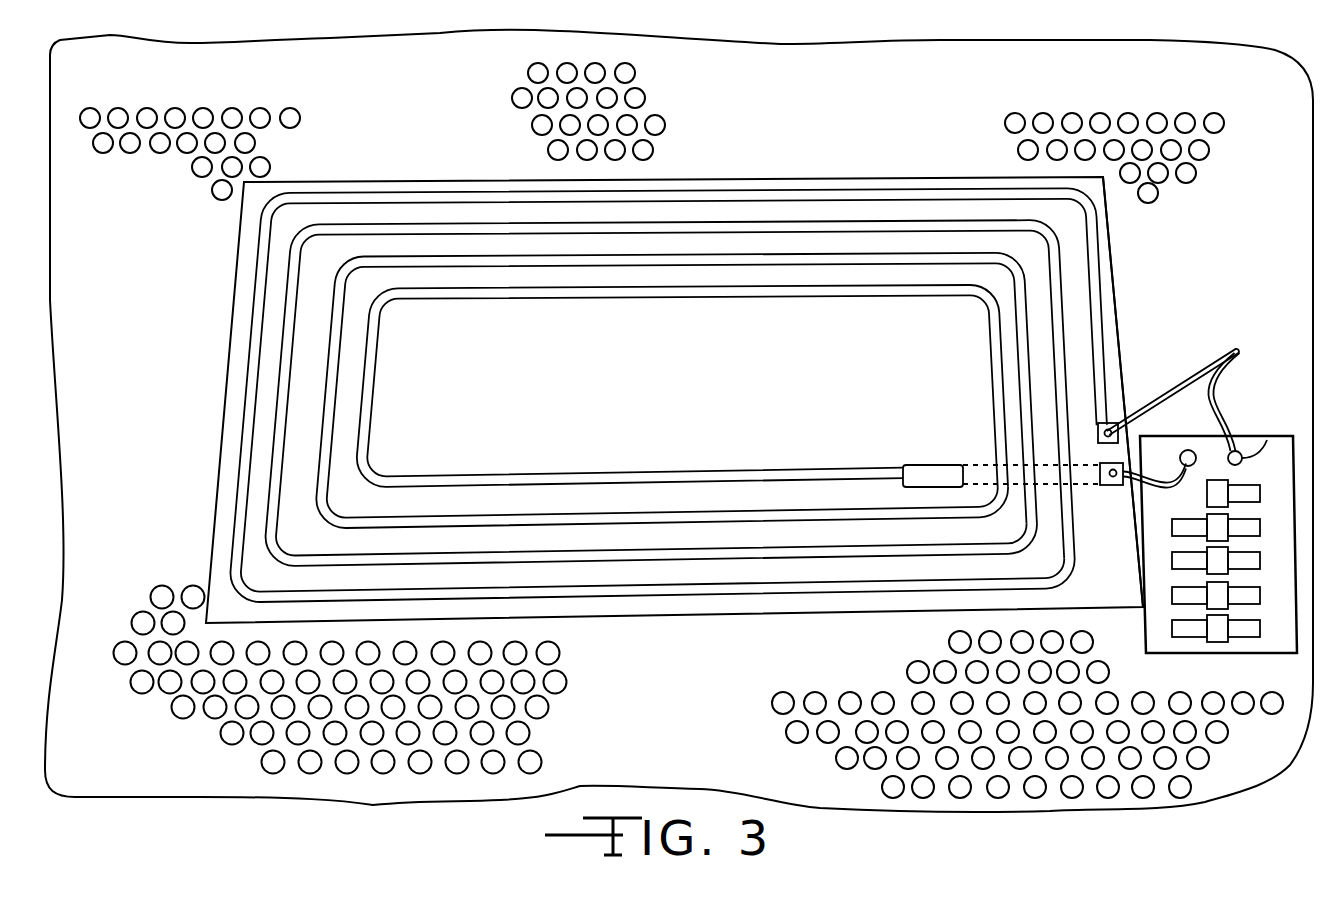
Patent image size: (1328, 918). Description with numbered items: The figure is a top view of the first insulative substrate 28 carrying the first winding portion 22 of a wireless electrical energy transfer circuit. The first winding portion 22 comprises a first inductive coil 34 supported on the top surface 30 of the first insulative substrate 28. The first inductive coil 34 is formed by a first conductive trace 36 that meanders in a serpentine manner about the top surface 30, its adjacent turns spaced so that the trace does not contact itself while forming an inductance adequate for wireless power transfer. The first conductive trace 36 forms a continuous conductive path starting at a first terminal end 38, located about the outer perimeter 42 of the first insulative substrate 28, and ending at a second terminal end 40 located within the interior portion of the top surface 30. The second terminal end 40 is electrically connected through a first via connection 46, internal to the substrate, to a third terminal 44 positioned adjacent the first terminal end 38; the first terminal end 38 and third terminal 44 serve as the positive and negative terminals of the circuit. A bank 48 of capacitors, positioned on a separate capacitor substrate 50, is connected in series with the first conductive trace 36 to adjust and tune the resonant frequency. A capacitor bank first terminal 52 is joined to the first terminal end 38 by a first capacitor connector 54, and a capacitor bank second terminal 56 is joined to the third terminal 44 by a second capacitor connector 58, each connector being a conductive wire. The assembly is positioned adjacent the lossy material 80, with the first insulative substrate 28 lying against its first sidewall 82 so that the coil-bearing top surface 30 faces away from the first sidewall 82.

The first winding portion 22 is at (668, 354).
The first insulative substrate 28 is at (1208, 454).
The top surface 30 is at (243, 357).
The first inductive coil 34 is at (372, 400).
The first conductive trace 36 is at (442, 200).
The first terminal end 38 is at (1124, 410).
The second terminal end 40 is at (935, 465).
The outer perimeter 42 is at (1116, 283).
The third terminal 44 is at (1113, 486).
The first via connection 46 is at (1015, 458).
The bank of capacitors 48 is at (1247, 432).
The capacitor substrate 50 is at (1297, 458).
The capacitor bank first terminal 52 is at (1267, 440).
The first capacitor connector 54 is at (1238, 349).
The capacitor bank second terminal 56 is at (1192, 450).
The second capacitor connector 58 is at (1152, 466).
The lossy material 80 is at (97, 772).
The first sidewall 82 is at (660, 695).